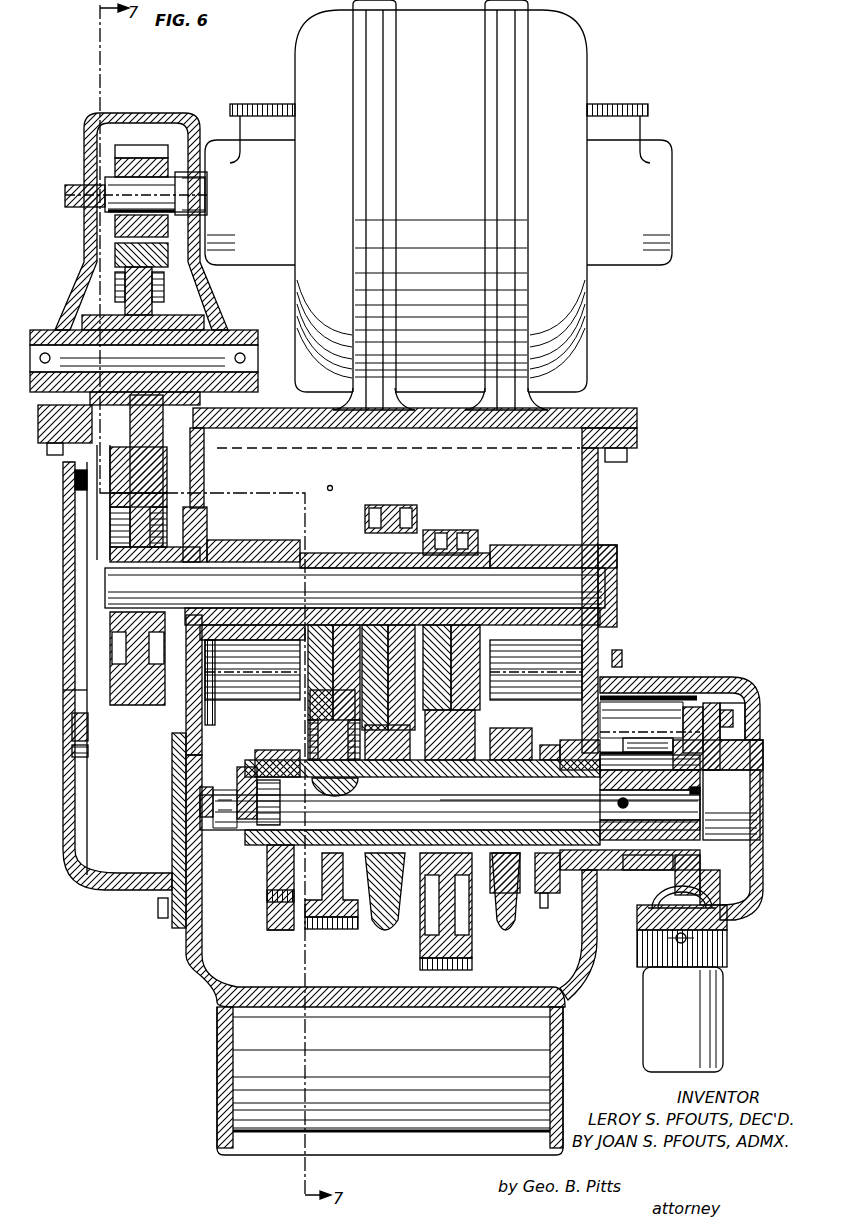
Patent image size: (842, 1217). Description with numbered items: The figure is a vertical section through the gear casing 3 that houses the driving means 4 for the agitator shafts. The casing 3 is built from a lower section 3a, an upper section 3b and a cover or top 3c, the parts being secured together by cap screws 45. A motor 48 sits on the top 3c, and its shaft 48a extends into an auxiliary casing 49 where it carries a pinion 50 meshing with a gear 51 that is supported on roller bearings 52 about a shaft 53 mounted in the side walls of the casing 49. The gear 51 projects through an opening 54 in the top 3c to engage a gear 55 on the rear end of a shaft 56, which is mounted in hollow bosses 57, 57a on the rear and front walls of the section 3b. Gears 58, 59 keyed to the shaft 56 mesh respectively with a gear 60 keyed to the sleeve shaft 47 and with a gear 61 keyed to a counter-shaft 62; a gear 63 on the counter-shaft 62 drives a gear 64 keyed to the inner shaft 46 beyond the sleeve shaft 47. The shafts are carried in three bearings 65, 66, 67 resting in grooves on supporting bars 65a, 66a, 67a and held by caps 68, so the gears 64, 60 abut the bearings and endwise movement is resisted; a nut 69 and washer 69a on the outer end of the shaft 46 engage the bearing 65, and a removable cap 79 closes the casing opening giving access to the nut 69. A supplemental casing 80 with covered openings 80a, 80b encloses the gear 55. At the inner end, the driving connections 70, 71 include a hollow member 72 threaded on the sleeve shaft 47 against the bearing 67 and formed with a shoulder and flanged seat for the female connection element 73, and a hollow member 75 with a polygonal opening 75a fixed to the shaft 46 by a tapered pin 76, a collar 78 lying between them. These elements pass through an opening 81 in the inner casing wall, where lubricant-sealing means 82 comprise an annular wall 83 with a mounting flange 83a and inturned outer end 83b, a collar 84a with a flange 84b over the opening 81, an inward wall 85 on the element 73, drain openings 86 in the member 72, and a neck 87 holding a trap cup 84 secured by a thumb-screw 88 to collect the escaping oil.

The casing 3 is at (193, 990).
The lower section 3a is at (217, 1062).
The upper section 3b is at (600, 522).
The cover or top 3c is at (615, 406).
The driving means 4 is at (280, 918).
The cap screws 45 is at (625, 462).
The driven shaft 46 is at (408, 795).
The sleeve shaft 47 is at (447, 795).
The motor 48 is at (438, 205).
The motor shaft 48a is at (200, 196).
The auxiliary casing 49 is at (84, 230).
The pinion 50 is at (149, 130).
The gear 51 is at (160, 290).
The roller bearings 52 is at (210, 322).
The shaft 53 is at (258, 357).
The opening 54 is at (232, 450).
The gear 55 is at (125, 705).
The shaft 56 is at (275, 584).
The hollow boss 57 is at (245, 540).
The hollow boss 57a is at (538, 537).
The gear 58 is at (465, 523).
The gear 59 is at (405, 505).
The gear 60 is at (472, 960).
The gear 61 is at (378, 665).
The counter-shaft 62 is at (215, 700).
The gear 63 is at (252, 670).
The gear 64 is at (330, 929).
The bearing 65 is at (267, 870).
The supporting bar 65a is at (270, 905).
The bearing 66 is at (378, 795).
The supporting bar 66a is at (387, 935).
The bearing 67 is at (500, 795).
The supporting bar 67a is at (510, 935).
The caps 68 is at (508, 735).
The nut 69 is at (225, 830).
The washer 69a is at (238, 770).
The driving connection 70 is at (772, 852).
The driving connection 71 is at (731, 805).
The hollow member 72 is at (613, 728).
The shoulder / female connection element 73 is at (775, 742).
The hollow member 75 is at (658, 835).
The polygonal opening 75a is at (700, 790).
The tapered pin 76 is at (598, 800).
The collar 78 is at (600, 870).
The removable cap 79 is at (172, 835).
The supplemental casing 80 is at (125, 890).
The opening 80a is at (63, 692).
The opening 80b is at (70, 845).
The opening 81 is at (552, 912).
The lubricant-leakage preventing means 82 is at (650, 692).
The annular wall 83 is at (668, 677).
The flange 83a is at (622, 657).
The inturned wall 83b is at (757, 912).
The trap 84 is at (723, 1000).
The collar or ring 84a is at (548, 893).
The flange 84b is at (536, 670).
The inwardly extending wall 85 is at (731, 825).
The openings 86 is at (655, 878).
The neck 87 is at (727, 945).
The thumb-screw 88 is at (672, 945).